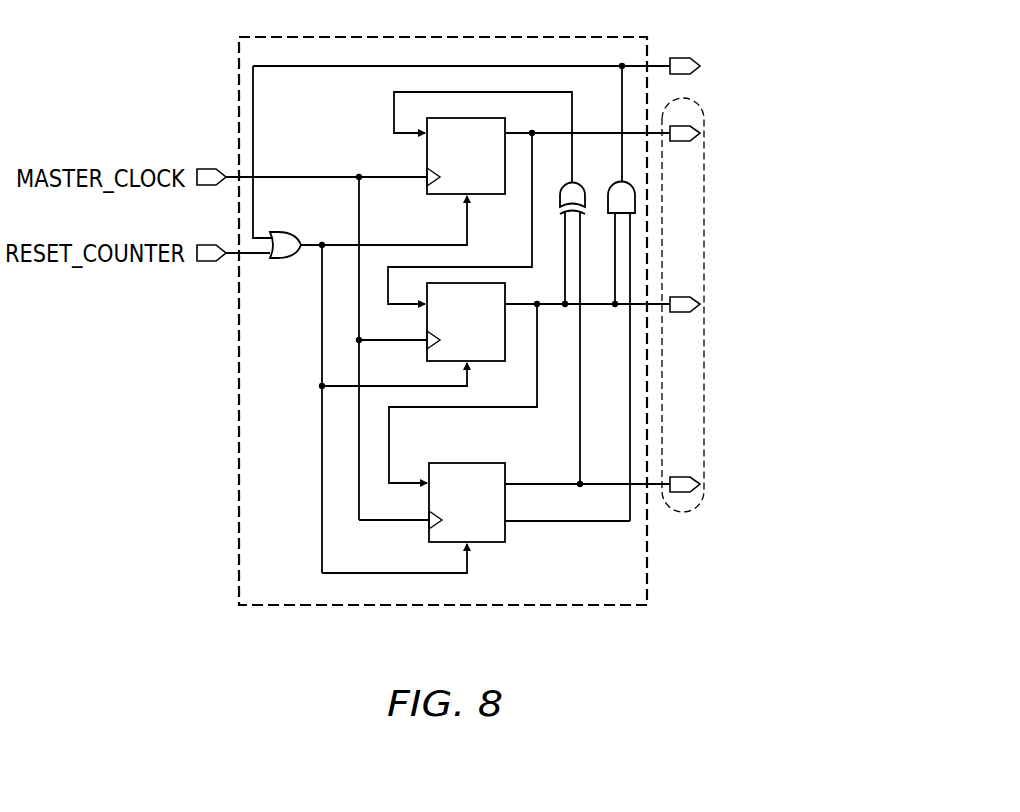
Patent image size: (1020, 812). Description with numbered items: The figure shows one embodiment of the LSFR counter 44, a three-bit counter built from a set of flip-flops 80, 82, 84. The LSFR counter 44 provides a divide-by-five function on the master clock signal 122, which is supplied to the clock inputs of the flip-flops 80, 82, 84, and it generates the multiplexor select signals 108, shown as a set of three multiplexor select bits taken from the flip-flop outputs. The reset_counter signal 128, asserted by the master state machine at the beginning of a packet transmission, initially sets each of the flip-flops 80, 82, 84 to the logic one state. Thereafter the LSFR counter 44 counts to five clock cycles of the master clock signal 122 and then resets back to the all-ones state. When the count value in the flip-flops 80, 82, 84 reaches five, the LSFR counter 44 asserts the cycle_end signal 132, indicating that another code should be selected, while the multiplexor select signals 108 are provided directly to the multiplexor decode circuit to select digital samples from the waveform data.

The LSFR counter 44 is at (443, 306).
The flip-flop 80 is at (475, 143).
The flip-flop 82 is at (456, 246).
The flip-flop 84 is at (509, 422).
The multiplexor select signals 108 is at (704, 305).
The master clock signal 122 is at (327, 336).
The reset_counter signal 128 is at (251, 256).
The cycle_end signal 132 is at (541, 100).